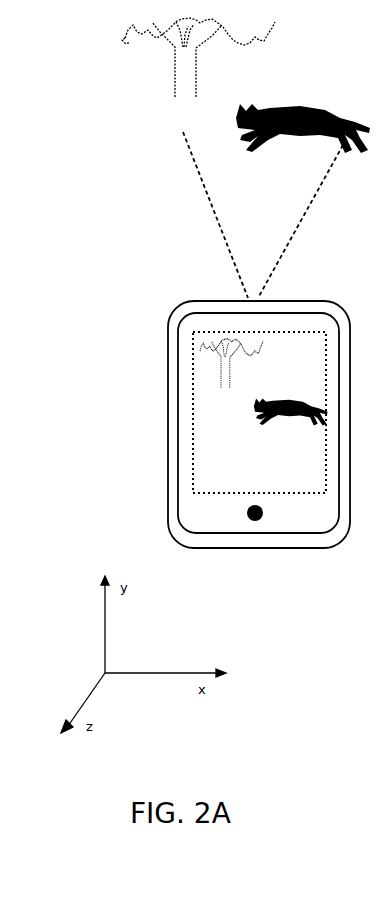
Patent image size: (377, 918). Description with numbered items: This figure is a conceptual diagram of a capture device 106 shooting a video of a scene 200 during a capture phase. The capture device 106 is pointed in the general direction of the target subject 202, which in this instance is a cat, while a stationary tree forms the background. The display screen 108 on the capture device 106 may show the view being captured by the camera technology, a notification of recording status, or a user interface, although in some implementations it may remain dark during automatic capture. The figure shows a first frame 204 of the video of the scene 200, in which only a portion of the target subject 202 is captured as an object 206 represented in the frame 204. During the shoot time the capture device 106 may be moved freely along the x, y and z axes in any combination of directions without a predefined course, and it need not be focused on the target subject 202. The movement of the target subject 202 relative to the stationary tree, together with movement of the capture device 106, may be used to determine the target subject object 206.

The scene 200 is at (60, 59).
The target subject 202 is at (223, 118).
The capture device 106 is at (168, 330).
The display screen 108 is at (198, 473).
The first frame 204 is at (213, 433).
The target subject object 206 is at (242, 399).